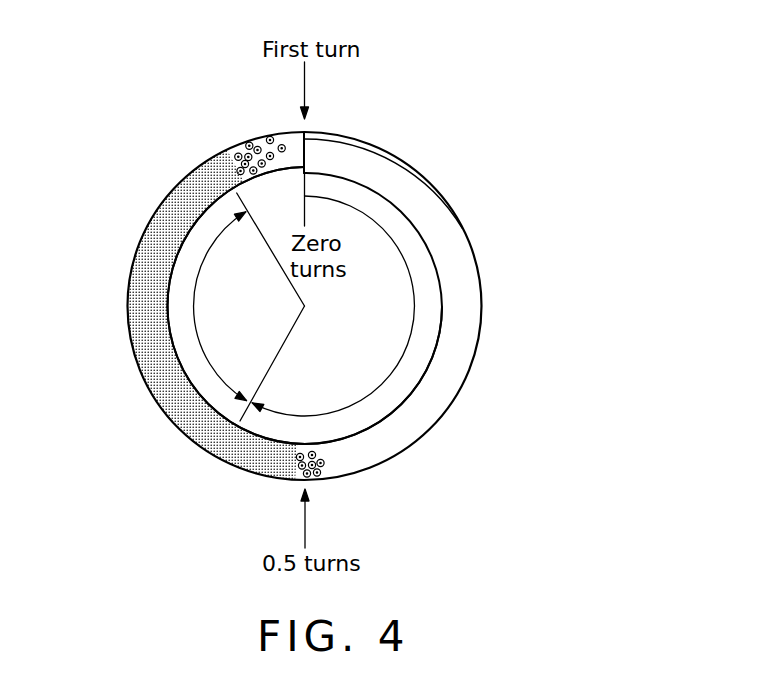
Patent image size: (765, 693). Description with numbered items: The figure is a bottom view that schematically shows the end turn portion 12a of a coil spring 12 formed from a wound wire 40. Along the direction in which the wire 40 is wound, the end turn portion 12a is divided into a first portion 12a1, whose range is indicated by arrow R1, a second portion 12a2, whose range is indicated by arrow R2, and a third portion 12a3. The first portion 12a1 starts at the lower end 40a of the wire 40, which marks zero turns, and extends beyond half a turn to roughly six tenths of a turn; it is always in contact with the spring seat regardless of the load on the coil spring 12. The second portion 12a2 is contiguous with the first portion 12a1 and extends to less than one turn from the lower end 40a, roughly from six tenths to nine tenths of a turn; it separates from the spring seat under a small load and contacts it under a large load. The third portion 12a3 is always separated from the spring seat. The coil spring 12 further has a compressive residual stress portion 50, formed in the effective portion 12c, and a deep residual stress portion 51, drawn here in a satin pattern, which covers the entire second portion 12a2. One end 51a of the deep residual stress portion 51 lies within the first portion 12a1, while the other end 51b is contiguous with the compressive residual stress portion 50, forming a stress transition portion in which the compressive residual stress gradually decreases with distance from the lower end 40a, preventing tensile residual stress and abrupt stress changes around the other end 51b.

The coil spring 12 is at (332, 296).
The end turn portion 12a is at (305, 296).
The first portion 12a1 is at (415, 438).
The second portion 12a2 is at (143, 385).
The third portion 12a3 is at (229, 198).
The effective portion 12c is at (368, 142).
The wire 40 is at (333, 287).
The lower end 40a is at (305, 133).
The compressive residual stress portion 50 is at (229, 293).
The deep residual stress portion 51 is at (137, 290).
The one end 51a is at (318, 473).
The other end 51b is at (281, 131).
The arrow R1 is at (409, 338).
The arrow R2 is at (195, 304).